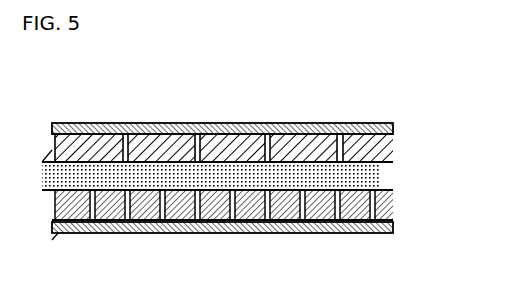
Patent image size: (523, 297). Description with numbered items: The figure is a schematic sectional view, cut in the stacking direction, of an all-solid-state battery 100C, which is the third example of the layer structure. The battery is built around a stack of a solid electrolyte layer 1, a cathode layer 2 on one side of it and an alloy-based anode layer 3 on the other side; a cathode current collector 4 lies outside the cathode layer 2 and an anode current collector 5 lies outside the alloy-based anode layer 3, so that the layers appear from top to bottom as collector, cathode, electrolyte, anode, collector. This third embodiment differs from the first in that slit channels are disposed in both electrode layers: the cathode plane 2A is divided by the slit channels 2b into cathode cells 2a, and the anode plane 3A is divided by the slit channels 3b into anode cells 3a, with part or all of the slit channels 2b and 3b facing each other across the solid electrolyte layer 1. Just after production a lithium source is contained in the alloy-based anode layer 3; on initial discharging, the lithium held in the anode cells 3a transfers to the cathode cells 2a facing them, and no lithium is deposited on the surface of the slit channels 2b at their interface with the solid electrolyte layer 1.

The all-solid-state battery 100C is at (395, 74).
The solid electrolyte layer 1 is at (381, 180).
The cathode layer 2 is at (243, 117).
The cathode cells 2a is at (140, 136).
The cathode plane 2A is at (222, 134).
The slit channels 2b is at (328, 123).
The alloy-based anode layer 3 is at (248, 236).
The anode plane 3A is at (112, 234).
The anode cells 3a is at (177, 234).
The slit channels 3b is at (228, 234).
The cathode current collector 4 is at (393, 122).
The anode current collector 5 is at (390, 233).